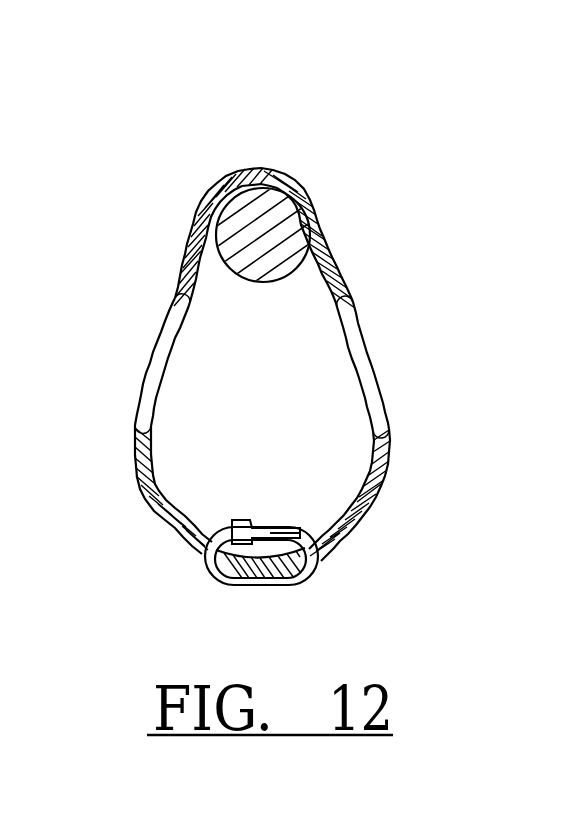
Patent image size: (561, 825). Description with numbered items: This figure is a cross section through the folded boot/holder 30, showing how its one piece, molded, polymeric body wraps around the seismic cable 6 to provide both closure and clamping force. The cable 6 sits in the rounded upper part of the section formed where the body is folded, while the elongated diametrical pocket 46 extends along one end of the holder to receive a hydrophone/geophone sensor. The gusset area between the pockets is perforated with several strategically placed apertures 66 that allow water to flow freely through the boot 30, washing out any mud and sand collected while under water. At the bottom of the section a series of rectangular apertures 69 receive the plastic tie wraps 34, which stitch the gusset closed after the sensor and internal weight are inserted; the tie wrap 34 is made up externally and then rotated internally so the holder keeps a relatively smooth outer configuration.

The boot/holder 30 is at (207, 162).
The seismic cable 6 is at (268, 232).
The apertures 66 is at (157, 372).
The tie wraps 34 is at (278, 530).
The pocket 46 is at (138, 478).
The rectangular apertures 69 is at (185, 553).